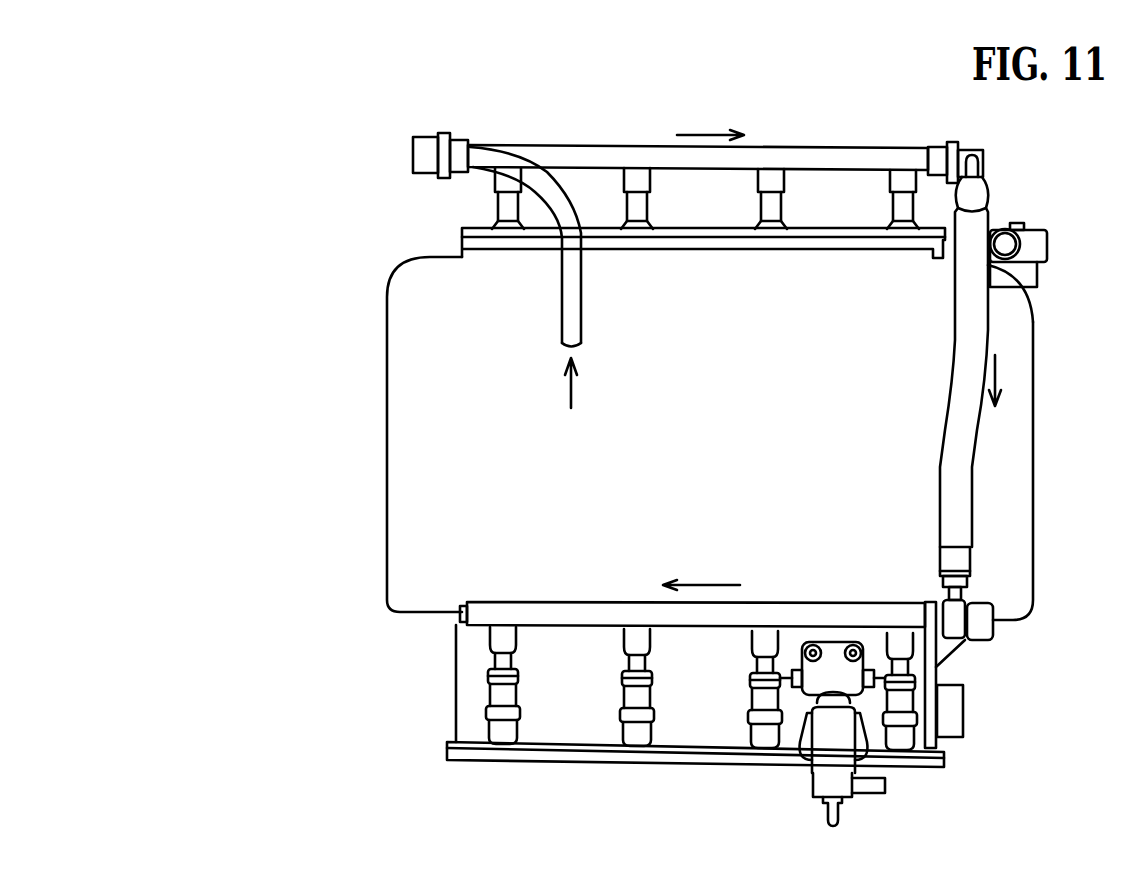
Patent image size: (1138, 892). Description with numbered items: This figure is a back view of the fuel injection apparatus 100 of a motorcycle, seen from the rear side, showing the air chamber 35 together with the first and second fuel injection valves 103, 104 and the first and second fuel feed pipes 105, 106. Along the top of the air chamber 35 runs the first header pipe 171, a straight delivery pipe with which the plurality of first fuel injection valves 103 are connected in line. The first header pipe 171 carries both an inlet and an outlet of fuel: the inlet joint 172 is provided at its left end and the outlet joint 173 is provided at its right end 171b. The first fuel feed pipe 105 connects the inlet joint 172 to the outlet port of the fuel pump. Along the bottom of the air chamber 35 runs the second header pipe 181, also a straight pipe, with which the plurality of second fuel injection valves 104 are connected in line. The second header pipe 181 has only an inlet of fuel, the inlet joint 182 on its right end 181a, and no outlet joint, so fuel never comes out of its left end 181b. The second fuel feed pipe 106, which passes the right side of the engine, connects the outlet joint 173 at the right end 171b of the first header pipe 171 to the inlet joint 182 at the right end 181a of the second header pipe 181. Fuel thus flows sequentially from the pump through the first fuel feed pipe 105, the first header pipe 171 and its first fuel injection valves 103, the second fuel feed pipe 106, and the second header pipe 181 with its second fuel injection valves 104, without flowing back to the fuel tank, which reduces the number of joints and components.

The fuel injection apparatus 100 is at (230, 168).
The air chamber 35 is at (402, 422).
The first fuel injection valves 103 is at (497, 178).
The second fuel injection valves 104 is at (630, 695).
The first fuel feed pipe 105 is at (568, 318).
The second fuel feed pipe 106 is at (962, 368).
The first header pipe 171 is at (621, 145).
The right end of first header pipe 171b is at (918, 157).
The inlet joint 172 is at (460, 145).
The outlet joint 173 is at (983, 160).
The second header pipe 181 is at (607, 600).
The right end of second header pipe 181a is at (912, 615).
The left end of second header pipe 181b is at (493, 608).
The inlet joint 182 is at (967, 593).